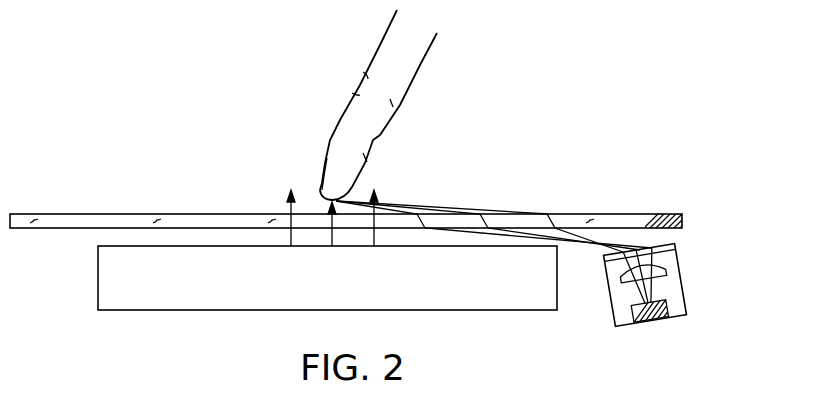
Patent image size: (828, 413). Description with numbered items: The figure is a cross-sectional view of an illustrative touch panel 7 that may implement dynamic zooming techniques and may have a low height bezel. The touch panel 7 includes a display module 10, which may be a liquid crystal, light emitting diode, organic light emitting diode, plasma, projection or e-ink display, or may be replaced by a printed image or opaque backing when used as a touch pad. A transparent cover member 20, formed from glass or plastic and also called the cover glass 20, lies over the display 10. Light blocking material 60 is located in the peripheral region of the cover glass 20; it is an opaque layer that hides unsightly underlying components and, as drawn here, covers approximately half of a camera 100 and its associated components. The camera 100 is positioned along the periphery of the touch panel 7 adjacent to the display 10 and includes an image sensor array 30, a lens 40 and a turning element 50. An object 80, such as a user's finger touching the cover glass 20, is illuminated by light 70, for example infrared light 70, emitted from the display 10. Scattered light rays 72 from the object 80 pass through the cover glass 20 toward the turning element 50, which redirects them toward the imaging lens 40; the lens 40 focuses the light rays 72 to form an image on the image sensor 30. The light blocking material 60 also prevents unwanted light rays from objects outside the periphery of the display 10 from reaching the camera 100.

The touch panel 7 is at (116, 118).
The display module 10 is at (195, 300).
The cover member 20 is at (88, 212).
The image sensor array 30 is at (652, 322).
The lens 40 is at (662, 270).
The turning element 50 is at (673, 245).
The light blocking material 60 is at (662, 213).
The light 70 is at (290, 205).
The light rays 72 is at (345, 198).
The object 80 is at (405, 87).
The camera 100 is at (675, 290).